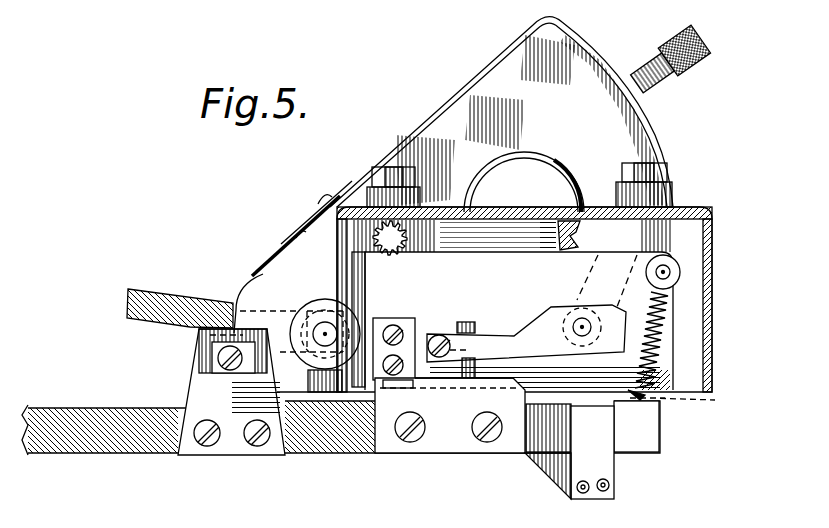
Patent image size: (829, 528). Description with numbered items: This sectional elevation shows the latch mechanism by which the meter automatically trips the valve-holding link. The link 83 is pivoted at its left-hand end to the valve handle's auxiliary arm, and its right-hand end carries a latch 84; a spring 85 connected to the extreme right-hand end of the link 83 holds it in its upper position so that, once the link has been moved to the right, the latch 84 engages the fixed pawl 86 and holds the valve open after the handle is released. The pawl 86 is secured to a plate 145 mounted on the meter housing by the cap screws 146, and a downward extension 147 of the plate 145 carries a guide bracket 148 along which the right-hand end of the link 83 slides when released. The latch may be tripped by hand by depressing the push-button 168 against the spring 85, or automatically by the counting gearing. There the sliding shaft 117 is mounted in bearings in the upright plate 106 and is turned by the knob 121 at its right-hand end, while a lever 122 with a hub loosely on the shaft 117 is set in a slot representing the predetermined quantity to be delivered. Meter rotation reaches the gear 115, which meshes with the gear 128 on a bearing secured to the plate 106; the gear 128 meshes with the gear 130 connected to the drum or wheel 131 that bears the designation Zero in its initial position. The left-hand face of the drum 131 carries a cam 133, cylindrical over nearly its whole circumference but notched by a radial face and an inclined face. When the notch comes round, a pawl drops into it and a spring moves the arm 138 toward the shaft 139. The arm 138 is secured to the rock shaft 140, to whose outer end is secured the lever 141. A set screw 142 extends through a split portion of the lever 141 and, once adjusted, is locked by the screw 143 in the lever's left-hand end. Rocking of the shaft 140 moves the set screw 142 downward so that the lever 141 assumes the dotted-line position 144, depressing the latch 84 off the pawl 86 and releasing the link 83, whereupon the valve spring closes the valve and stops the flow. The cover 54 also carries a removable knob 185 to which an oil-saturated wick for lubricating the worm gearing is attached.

The cover 54 is at (648, 145).
The link 83 is at (72, 421).
The latch 84 is at (437, 430).
The spring 85 is at (640, 363).
The pawl 86 is at (390, 383).
The upright plate 106 is at (470, 236).
The gear 115 is at (328, 200).
The sliding shaft 117 is at (325, 334).
The knob 121 is at (313, 298).
The lever 122 is at (164, 296).
The gear 128 is at (428, 245).
The gear 130 is at (577, 178).
The drum or wheel 131 is at (554, 215).
The cam 133 is at (585, 237).
The arm 138 is at (600, 270).
The shaft 139 is at (526, 295).
The rock shaft 140 is at (577, 320).
The lever 141 is at (481, 350).
The set screw 142 is at (460, 323).
The screw 143 is at (432, 338).
The dotted line position 144 is at (493, 370).
The plate 145 is at (681, 326).
The cap screws 146 is at (602, 373).
The downward extension 147 is at (557, 470).
The guide bracket 148 is at (604, 437).
The push-button 168 is at (205, 345).
The knob 185 is at (705, 55).